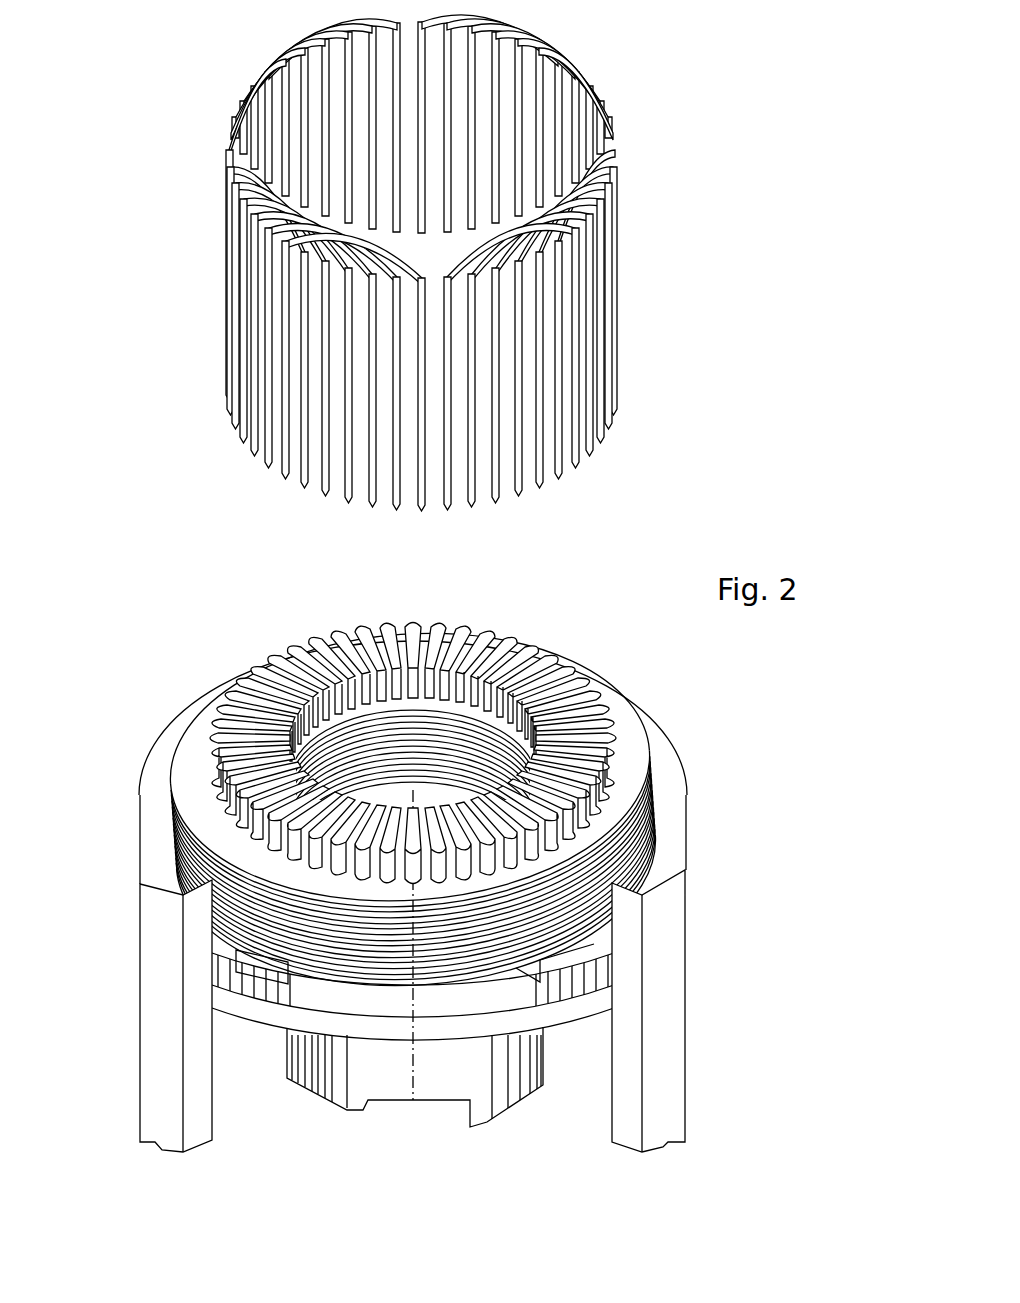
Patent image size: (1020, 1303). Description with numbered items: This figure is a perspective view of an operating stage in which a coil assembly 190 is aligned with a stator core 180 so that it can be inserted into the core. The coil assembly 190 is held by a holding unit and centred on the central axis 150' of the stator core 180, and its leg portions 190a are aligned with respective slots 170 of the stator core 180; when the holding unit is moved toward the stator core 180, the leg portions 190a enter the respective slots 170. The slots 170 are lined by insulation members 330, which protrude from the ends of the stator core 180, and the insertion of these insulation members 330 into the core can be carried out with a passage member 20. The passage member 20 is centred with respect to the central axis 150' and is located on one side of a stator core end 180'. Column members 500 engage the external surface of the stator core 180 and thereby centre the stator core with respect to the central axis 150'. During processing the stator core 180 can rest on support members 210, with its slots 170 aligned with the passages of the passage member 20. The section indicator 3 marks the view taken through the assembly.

The coil assembly 190 is at (668, 207).
The leg portions 190a is at (236, 318).
The section view indicator 3 is at (428, 600).
The stator core 180 is at (478, 762).
The stator core end 180' is at (353, 876).
The slots 170 is at (195, 812).
The insulation members 330 is at (357, 645).
The support members 210 is at (260, 960).
The passage member 20 is at (443, 1028).
The central axis 150' is at (379, 987).
The column members 500 is at (160, 1012).